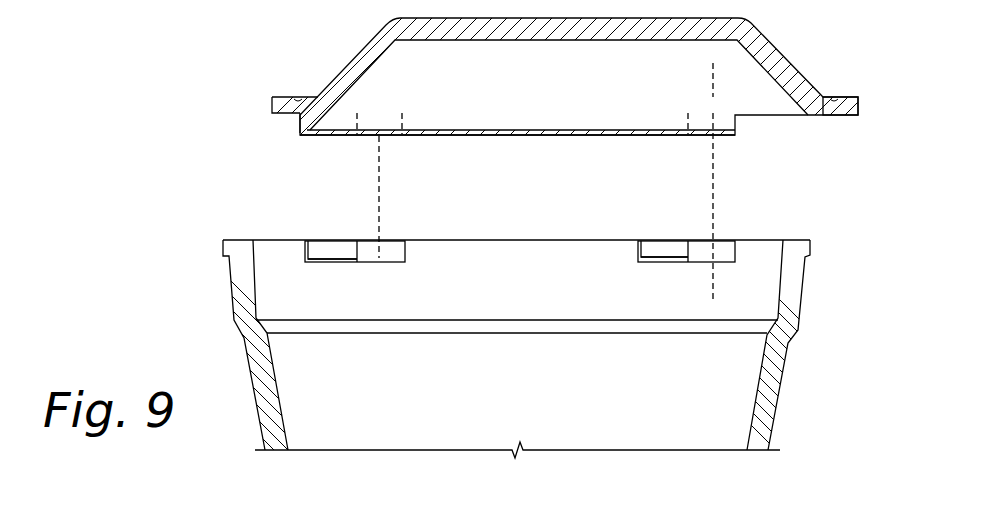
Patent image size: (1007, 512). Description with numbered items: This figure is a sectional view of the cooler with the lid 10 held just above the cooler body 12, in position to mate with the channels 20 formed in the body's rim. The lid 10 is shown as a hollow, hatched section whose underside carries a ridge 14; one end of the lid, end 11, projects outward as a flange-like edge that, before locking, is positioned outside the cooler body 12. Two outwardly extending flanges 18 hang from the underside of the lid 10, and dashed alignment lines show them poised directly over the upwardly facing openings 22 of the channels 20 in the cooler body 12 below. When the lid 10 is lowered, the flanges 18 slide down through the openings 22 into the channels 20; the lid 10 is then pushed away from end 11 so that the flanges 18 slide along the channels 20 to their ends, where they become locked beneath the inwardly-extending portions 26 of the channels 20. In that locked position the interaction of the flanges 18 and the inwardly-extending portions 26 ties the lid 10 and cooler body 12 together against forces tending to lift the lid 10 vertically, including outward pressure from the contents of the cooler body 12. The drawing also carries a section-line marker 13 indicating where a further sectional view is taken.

The lid 10 is at (362, 42).
The end 11 is at (835, 116).
The cooler body 12 is at (233, 297).
The section line 13- 13 is at (713, 63).
The ridge 14 is at (580, 136).
The flange 18 is at (357, 118).
The channel 20 is at (328, 247).
The upwardly facing opening 22 is at (392, 247).
The inwardly-extending portion 26 is at (342, 261).